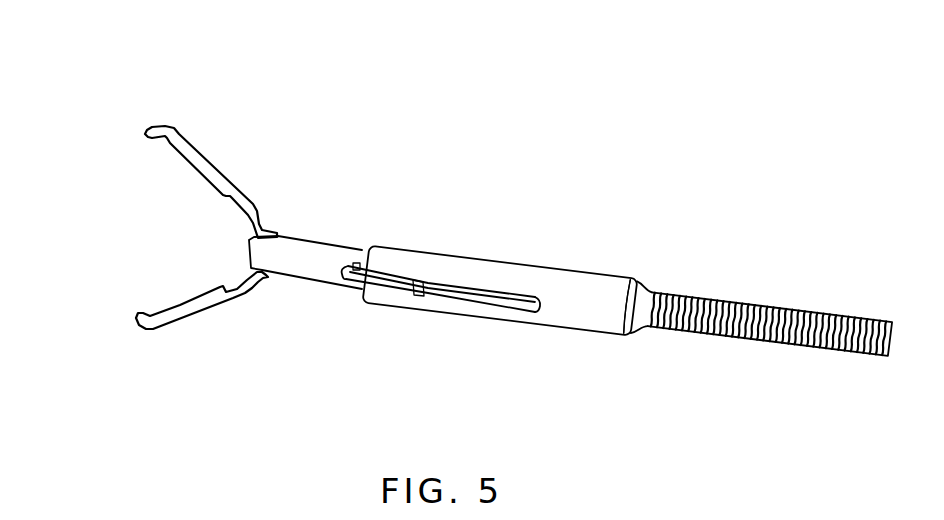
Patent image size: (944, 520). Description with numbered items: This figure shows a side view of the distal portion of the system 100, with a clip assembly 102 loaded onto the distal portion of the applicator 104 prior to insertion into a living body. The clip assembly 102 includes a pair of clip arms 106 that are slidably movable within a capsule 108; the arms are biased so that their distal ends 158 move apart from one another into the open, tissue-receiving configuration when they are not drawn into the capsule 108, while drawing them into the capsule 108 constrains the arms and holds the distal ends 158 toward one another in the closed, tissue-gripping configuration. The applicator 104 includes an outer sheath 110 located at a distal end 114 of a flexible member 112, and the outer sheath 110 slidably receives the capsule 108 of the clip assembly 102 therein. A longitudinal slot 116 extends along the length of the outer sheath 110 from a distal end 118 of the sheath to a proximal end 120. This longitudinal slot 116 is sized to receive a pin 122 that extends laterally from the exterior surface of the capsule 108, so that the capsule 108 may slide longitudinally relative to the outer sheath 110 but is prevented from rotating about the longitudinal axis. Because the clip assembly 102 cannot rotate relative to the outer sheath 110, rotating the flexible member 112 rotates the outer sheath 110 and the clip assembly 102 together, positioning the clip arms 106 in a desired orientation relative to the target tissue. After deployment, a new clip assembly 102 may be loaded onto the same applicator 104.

The system 100 is at (516, 131).
The clip assembly 102 is at (293, 302).
The applicator 104 is at (679, 356).
The clip arms 106 is at (190, 164).
The capsule 108 is at (316, 258).
The outer sheath 110 is at (545, 272).
The flexible member 112 is at (807, 330).
The distal end of the flexible member 114 is at (667, 300).
The longitudinal slot 116 is at (463, 280).
The distal end of the outer sheath 118 is at (380, 258).
The proximal end of the longitudinal slot 120 is at (534, 305).
The pin 122 is at (418, 292).
The distal ends of the clip arms 158 is at (151, 128).